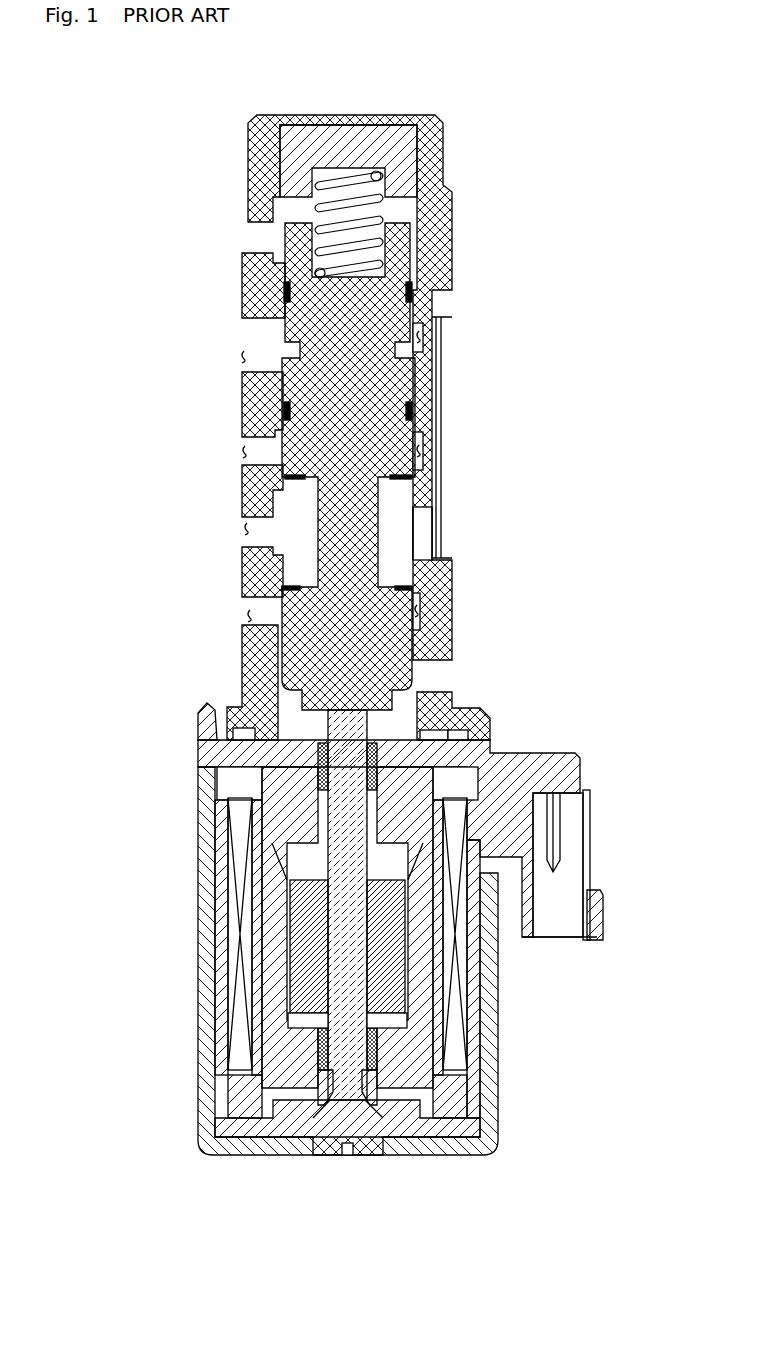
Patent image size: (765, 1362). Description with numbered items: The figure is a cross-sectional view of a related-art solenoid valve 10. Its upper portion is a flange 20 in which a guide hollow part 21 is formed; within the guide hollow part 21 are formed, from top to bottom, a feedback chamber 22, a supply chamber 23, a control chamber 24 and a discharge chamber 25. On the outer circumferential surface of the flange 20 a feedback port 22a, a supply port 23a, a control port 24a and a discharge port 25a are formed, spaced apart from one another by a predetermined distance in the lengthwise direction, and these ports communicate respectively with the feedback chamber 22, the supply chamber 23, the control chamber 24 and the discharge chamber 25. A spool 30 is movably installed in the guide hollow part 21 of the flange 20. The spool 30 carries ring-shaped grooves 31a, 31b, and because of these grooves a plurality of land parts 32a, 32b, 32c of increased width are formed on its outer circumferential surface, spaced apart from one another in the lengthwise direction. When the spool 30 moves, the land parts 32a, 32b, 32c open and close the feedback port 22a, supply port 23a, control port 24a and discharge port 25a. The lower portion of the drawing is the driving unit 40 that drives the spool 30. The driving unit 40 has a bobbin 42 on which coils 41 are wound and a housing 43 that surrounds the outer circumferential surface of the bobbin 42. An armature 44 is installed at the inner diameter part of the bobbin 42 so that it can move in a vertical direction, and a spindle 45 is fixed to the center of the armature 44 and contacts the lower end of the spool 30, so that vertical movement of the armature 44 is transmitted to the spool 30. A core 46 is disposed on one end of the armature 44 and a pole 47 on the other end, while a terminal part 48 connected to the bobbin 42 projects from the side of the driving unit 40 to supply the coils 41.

The solenoid valve 10 is at (174, 165).
The flange 20 is at (443, 232).
The guide hollow part 21 is at (417, 375).
The feedback chamber 22 is at (424, 340).
The feedback port 22a is at (240, 358).
The supply chamber 23 is at (424, 450).
The supply port 23a is at (241, 453).
The control chamber 24 is at (402, 520).
The control port 24a is at (243, 530).
The discharge chamber 25 is at (433, 603).
The discharge port 25a is at (246, 617).
The spool 30 is at (282, 492).
The ring-shaped groove 31a is at (287, 354).
The ring-shaped groove 31b is at (315, 538).
The land part 32a is at (410, 312).
The land part 32b is at (413, 423).
The land part 32c is at (433, 650).
The driving unit 40 is at (183, 870).
The coils 41 is at (240, 970).
The bobbin 42 is at (227, 1027).
The housing 43 is at (207, 1087).
The armature 44 is at (315, 920).
The spindle 45 is at (352, 962).
The core 46 is at (507, 740).
The pole 47 is at (404, 1137).
The terminal part 48 is at (562, 823).